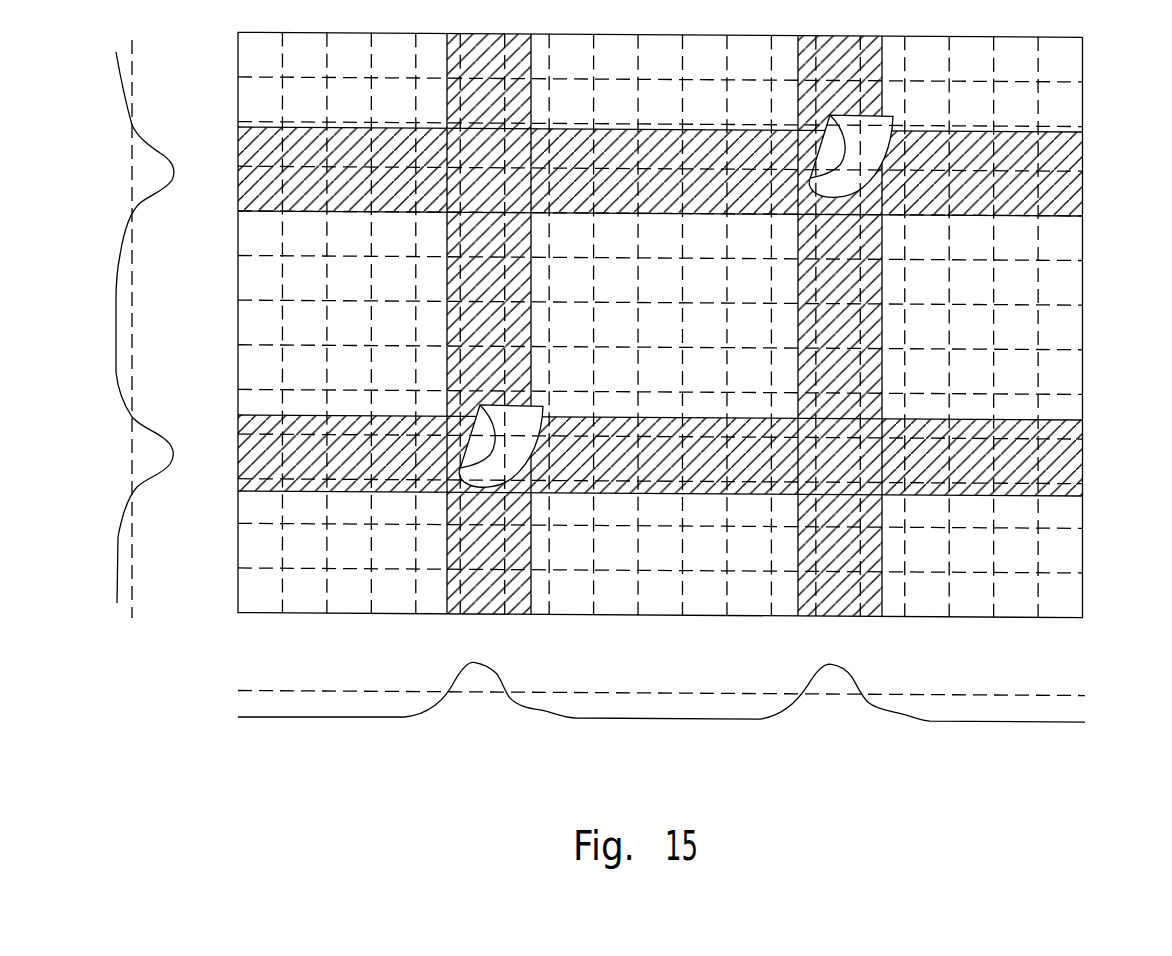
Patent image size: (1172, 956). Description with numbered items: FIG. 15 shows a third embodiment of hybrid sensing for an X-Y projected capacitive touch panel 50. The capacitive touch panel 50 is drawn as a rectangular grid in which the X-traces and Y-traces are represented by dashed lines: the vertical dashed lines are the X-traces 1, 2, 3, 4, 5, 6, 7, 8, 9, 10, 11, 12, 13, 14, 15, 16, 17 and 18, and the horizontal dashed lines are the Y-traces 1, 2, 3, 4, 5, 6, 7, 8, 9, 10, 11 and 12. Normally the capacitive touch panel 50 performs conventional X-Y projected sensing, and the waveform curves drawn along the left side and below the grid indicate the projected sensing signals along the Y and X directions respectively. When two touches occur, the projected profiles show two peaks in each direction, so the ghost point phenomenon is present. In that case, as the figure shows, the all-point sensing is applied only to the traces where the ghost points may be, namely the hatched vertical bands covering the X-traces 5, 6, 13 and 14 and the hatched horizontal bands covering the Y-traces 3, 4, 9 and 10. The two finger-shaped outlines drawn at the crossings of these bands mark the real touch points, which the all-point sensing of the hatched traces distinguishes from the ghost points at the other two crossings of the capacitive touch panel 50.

The capacitive touch panel 50 is at (1083, 357).
The grid coordinate line 1 is at (644, 340).
The grid coordinate line 2 is at (644, 340).
The grid coordinate line 3 is at (644, 340).
The grid coordinate line 4 is at (644, 340).
The grid coordinate line 5 is at (644, 340).
The grid coordinate line 6 is at (644, 340).
The grid coordinate line 7 is at (644, 340).
The grid coordinate line 8 is at (644, 340).
The grid coordinate line 9 is at (644, 340).
The grid coordinate line 10 is at (638, 340).
The grid coordinate line 11 is at (638, 340).
The grid coordinate line 12 is at (638, 340).
The grid coordinate line 13 is at (818, 341).
The grid coordinate line 14 is at (863, 341).
The grid coordinate line 15 is at (908, 341).
The grid coordinate line 16 is at (953, 341).
The grid coordinate line 17 is at (998, 342).
The grid coordinate line 18 is at (1043, 342).